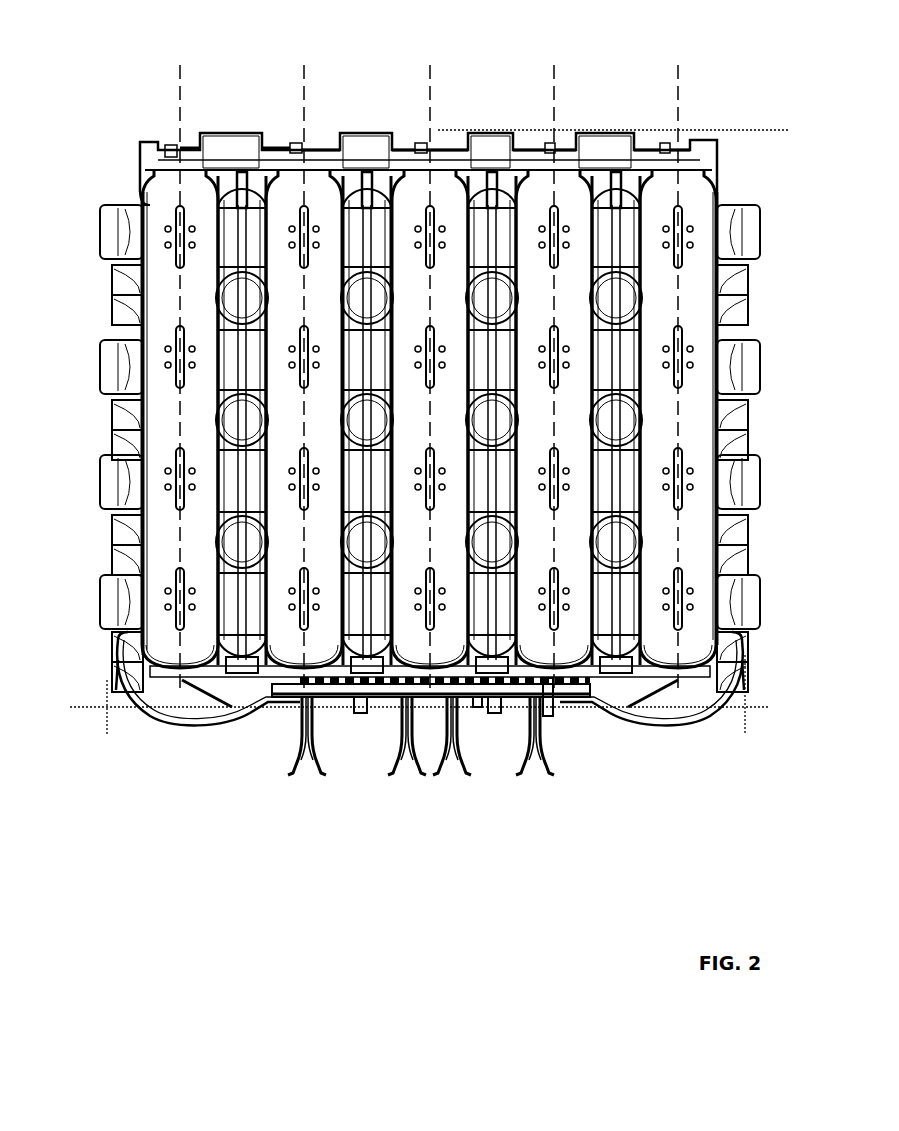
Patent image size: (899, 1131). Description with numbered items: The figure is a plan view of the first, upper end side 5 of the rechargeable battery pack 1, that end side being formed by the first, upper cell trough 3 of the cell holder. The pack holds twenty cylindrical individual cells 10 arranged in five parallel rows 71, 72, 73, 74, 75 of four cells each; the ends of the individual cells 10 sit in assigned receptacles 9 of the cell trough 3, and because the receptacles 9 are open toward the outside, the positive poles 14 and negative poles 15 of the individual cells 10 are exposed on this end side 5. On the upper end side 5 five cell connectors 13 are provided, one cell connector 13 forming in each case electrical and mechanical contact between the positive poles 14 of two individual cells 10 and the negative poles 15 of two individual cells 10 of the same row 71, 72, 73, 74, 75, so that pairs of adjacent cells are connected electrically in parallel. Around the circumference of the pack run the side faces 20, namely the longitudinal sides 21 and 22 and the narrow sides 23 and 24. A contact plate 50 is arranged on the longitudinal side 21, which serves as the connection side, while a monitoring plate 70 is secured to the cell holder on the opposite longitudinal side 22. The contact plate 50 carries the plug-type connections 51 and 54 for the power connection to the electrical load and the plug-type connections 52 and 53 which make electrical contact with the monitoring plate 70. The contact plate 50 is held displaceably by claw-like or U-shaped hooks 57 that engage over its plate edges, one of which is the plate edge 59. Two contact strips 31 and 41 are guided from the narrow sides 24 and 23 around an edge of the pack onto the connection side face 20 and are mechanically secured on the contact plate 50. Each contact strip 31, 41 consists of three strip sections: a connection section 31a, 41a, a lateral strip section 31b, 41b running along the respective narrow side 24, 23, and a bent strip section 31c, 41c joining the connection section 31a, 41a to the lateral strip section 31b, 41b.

The rechargeable battery pack 1 is at (100, 108).
The first, upper cell trough 3 is at (490, 351).
The first, upper end side 5 is at (613, 273).
The receptacle 9 is at (376, 348).
The individual cell 10 is at (126, 279).
The cell connector 13 is at (168, 432).
The positive pole 14 is at (172, 481).
The negative pole 15 is at (172, 221).
The side face 20 is at (223, 112).
The longitudinal side 21 is at (752, 710).
The longitudinal side 22 is at (762, 129).
The narrow side 23 is at (748, 661).
The narrow side 24 is at (104, 688).
The contact strip 31 is at (162, 685).
The connection section 31a is at (244, 712).
The lateral strip section 31b is at (126, 580).
The bent strip section 31c is at (92, 710).
The contact strip 41 is at (687, 685).
The connection section 41a is at (586, 706).
The lateral strip section 41b is at (740, 578).
The bent strip section 41c is at (702, 718).
The contact plate 50 is at (562, 702).
The plug-type connection 51 is at (310, 742).
The plug-type connection 52 is at (400, 745).
The plug-type connection 53 is at (448, 745).
The plug-type connection 54 is at (542, 756).
The hook 57 is at (358, 714).
The plate edge 59 is at (477, 700).
The monitoring plate 70 is at (324, 147).
The row 71 is at (178, 72).
The row 72 is at (301, 72).
The row 73 is at (434, 72).
The row 74 is at (557, 72).
The row 75 is at (682, 72).